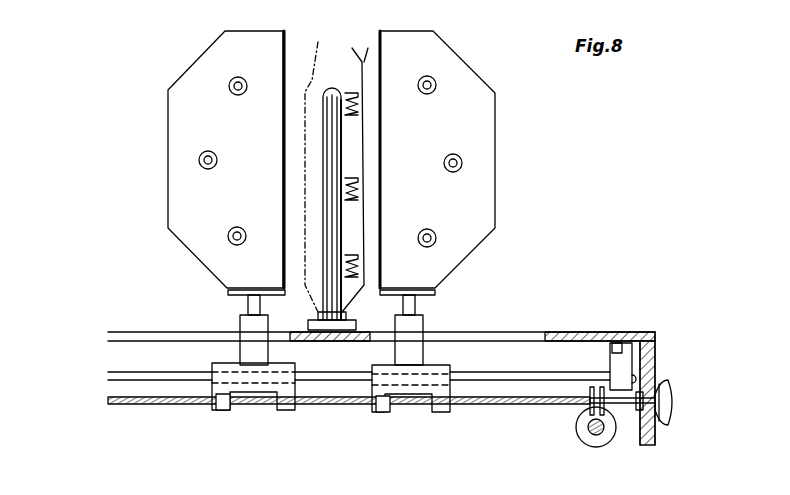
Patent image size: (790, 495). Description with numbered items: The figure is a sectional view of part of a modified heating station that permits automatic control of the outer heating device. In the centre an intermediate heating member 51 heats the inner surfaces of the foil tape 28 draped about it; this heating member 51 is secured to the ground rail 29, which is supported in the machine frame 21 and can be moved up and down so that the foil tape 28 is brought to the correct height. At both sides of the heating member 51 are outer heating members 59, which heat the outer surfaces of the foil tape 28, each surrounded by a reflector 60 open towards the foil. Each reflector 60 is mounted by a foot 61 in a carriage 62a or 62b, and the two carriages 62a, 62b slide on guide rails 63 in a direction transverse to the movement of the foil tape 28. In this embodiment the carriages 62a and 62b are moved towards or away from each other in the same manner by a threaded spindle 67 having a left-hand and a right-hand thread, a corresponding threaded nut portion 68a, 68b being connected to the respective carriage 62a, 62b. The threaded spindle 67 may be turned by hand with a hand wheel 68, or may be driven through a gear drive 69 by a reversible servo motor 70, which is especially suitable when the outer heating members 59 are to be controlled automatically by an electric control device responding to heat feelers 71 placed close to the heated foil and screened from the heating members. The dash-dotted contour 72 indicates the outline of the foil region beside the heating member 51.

The machine frame 21 is at (655, 356).
The foil tape 28 is at (333, 88).
The ground rail 29 is at (318, 325).
The intermediate heating member 51 is at (330, 148).
The outer heating members 59 is at (236, 93).
The reflector 60 is at (214, 60).
The foot 61 is at (250, 325).
The carriage 62a is at (224, 366).
The carriage 62b is at (448, 372).
The guide rails 63 is at (128, 378).
The threaded spindle 67 is at (490, 406).
The hand wheel 68 is at (673, 405).
The threaded nut portion 68a is at (286, 412).
The threaded nut portion 68b is at (382, 414).
The gear drive 69 is at (594, 433).
The reversible servo motor 70 is at (592, 447).
The heat feelers 71 is at (351, 118).
The guide contour 72 is at (336, 170).